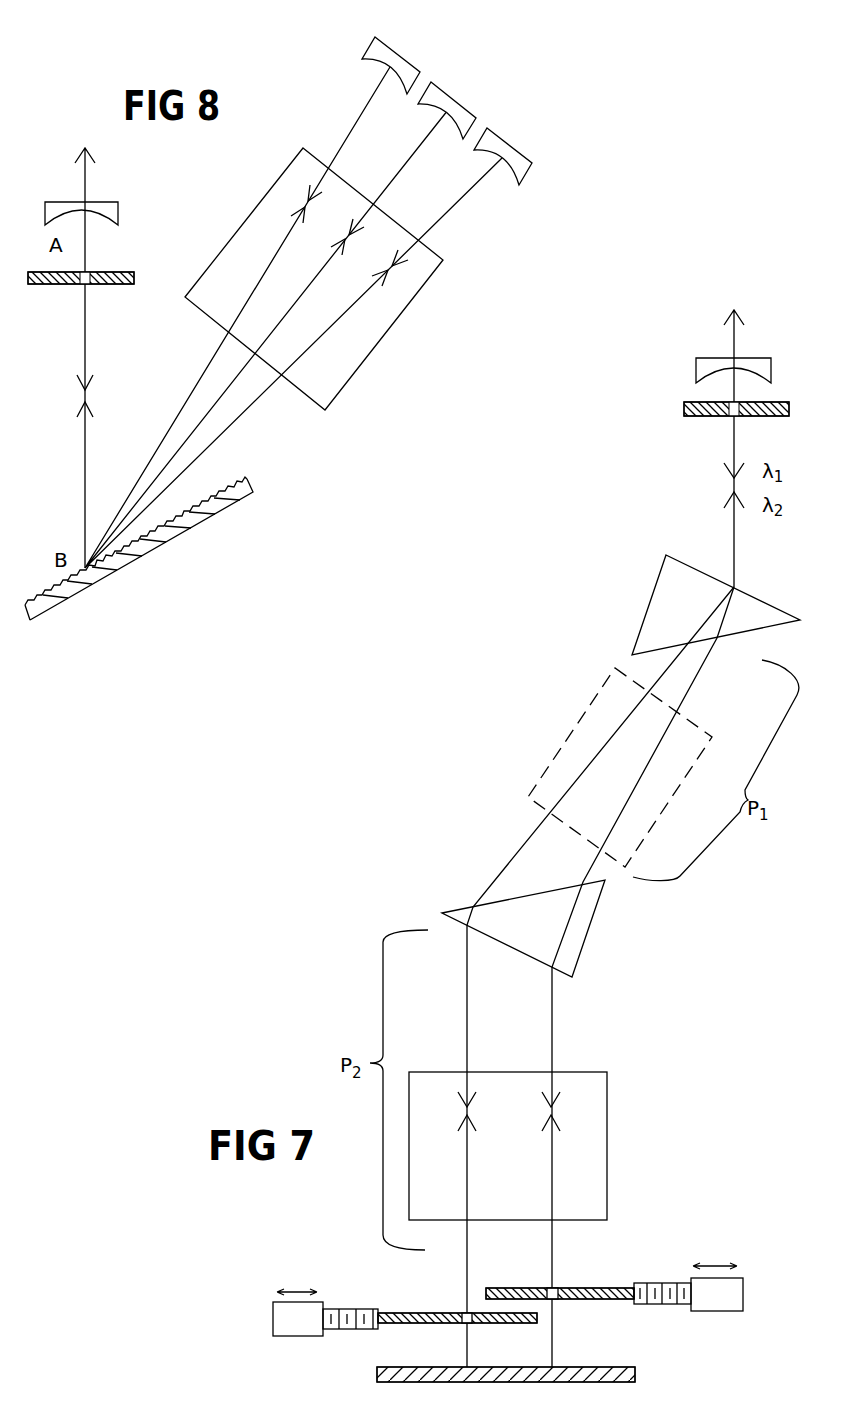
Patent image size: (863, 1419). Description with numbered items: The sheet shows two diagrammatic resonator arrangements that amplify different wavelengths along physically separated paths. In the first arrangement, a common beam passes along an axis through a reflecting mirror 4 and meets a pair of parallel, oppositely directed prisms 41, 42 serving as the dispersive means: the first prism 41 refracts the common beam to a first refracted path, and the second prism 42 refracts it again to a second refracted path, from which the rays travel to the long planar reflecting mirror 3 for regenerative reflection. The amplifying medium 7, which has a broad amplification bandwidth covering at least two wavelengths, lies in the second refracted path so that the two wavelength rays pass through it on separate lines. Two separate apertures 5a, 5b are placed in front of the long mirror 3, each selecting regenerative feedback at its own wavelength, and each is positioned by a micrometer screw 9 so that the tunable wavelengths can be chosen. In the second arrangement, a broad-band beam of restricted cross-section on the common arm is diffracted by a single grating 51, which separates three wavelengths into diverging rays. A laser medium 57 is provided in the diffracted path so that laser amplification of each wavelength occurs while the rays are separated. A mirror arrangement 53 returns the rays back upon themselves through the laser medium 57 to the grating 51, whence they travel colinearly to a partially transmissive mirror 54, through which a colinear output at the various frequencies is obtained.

In FIG. 7, the long planar reflecting mirror 3 is at (617, 1367).
In FIG. 7, the reflecting mirror 4 is at (771, 366).
In FIG. 7, the amplifying medium 7 is at (607, 1107).
In FIG. 7, the micrometer screw 9 is at (273, 1302).
In FIG. 7, the aperture 5a is at (463, 1312).
In FIG. 7, the aperture 5b is at (556, 1287).
In FIG. 7, the first prism 41 is at (665, 588).
In FIG. 7, the second prism 42 is at (578, 938).
In FIG. 8, the grating 51 is at (235, 481).
In FIG. 8, the mirror arrangement 53 is at (385, 36).
In FIG. 8, the partially transmissive mirror 54 is at (118, 212).
In FIG. 8, the laser medium 57 is at (285, 171).